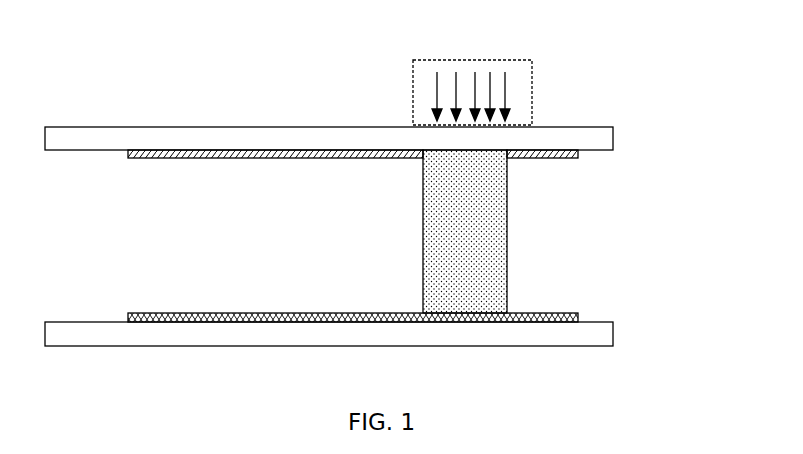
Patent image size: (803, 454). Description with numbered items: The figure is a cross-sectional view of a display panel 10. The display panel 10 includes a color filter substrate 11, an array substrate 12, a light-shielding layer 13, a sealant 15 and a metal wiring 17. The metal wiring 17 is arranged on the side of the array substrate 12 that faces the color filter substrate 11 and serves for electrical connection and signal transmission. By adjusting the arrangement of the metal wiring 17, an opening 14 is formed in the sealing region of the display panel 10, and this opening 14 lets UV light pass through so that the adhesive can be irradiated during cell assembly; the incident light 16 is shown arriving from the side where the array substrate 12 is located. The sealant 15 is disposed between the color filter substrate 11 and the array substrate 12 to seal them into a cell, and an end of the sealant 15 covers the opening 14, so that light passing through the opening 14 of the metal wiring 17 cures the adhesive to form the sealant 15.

The display panel 10 is at (300, 60).
The color filter substrate 11 is at (613, 335).
The array substrate 12 is at (613, 140).
The light-shielding layer 13 is at (578, 316).
The opening 14 is at (508, 158).
The sealant 15 is at (495, 229).
The ultraviolet light irradiation 16 is at (532, 93).
The metal wiring 17 is at (127, 153).